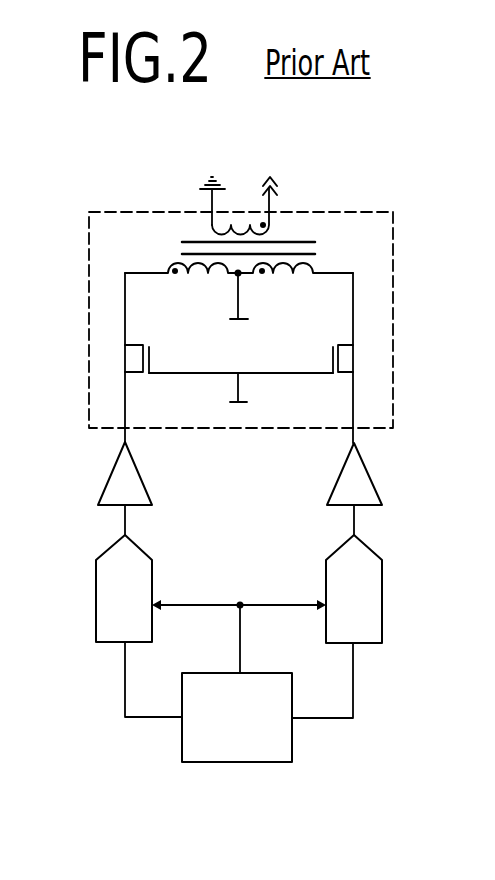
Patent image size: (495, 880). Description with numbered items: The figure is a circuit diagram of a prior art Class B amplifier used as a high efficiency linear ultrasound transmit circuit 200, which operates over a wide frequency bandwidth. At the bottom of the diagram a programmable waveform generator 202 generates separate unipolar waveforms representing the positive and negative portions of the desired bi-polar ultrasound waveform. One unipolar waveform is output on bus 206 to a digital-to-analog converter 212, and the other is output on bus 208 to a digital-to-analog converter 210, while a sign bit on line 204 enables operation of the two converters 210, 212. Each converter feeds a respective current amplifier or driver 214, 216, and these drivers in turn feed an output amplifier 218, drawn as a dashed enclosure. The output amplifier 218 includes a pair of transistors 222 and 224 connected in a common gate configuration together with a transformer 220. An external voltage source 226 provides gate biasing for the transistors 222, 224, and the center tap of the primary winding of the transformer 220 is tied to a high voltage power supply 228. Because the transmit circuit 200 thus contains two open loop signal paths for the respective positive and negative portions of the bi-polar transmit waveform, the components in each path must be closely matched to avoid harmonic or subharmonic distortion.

The transmit circuit 200 is at (340, 158).
The programmable waveform generator 202 is at (225, 762).
The line 204 is at (240, 668).
The bus 206 is at (300, 720).
The bus 208 is at (182, 722).
The digital-to-analog converter 210 is at (113, 628).
The digital-to-analog converter 212 is at (373, 638).
The current amplifier 214 is at (115, 492).
The current amplifier 216 is at (360, 478).
The output amplifier 218 is at (393, 258).
The transformer 220 is at (190, 253).
The transistor 222 is at (142, 362).
The transistor 224 is at (339, 362).
The external voltage source 226 is at (240, 390).
The high voltage power supply 228 is at (238, 302).